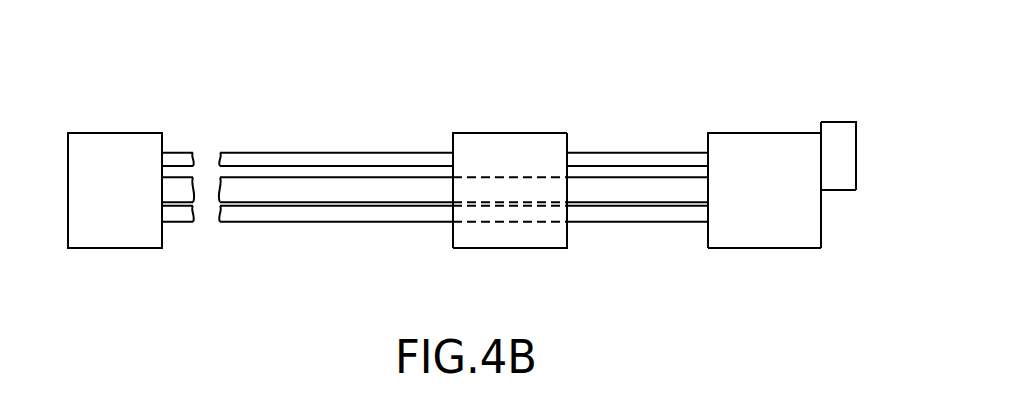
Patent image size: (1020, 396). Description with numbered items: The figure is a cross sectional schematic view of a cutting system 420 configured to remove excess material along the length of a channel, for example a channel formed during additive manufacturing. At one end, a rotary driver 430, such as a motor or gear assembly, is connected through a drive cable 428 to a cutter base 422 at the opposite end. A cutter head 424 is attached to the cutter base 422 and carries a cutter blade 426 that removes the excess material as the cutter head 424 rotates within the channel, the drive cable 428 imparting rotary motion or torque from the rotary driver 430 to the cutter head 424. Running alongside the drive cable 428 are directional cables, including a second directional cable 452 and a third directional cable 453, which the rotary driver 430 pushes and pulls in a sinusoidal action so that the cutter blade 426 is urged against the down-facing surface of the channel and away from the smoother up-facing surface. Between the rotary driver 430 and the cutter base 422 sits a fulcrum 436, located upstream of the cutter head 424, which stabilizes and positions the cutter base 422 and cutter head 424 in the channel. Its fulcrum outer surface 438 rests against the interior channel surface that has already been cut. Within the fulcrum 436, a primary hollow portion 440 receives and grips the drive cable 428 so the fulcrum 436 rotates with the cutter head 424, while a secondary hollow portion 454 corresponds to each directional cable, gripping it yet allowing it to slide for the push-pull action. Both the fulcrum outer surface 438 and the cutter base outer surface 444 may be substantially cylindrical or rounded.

The cutting system 420 is at (197, 62).
The cutter base 422 is at (761, 140).
The cutter head 424 is at (843, 178).
The cutter blade 426 is at (842, 128).
The drive cable 428 is at (257, 190).
The rotary driver 430 is at (110, 150).
The fulcrum 436 is at (490, 147).
The fulcrum outer surface 438 is at (533, 132).
The primary hollow portion 440 is at (477, 192).
The cutter base outer surface 444 is at (770, 247).
The second directional cable 452 is at (593, 158).
The third directional cable 453 is at (617, 212).
The secondary hollow portion 454 is at (525, 213).